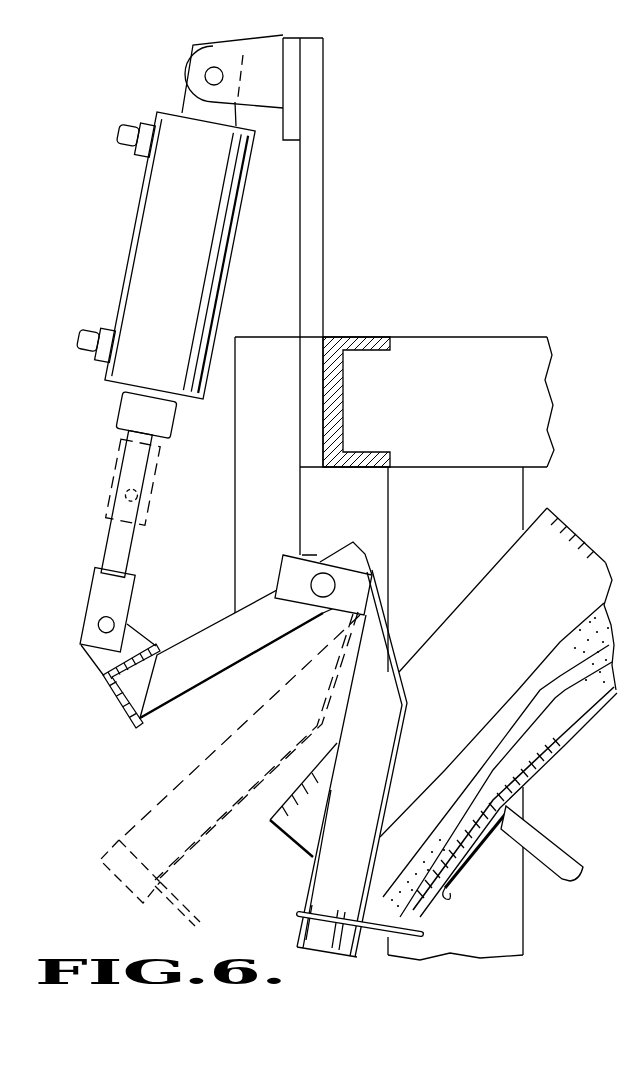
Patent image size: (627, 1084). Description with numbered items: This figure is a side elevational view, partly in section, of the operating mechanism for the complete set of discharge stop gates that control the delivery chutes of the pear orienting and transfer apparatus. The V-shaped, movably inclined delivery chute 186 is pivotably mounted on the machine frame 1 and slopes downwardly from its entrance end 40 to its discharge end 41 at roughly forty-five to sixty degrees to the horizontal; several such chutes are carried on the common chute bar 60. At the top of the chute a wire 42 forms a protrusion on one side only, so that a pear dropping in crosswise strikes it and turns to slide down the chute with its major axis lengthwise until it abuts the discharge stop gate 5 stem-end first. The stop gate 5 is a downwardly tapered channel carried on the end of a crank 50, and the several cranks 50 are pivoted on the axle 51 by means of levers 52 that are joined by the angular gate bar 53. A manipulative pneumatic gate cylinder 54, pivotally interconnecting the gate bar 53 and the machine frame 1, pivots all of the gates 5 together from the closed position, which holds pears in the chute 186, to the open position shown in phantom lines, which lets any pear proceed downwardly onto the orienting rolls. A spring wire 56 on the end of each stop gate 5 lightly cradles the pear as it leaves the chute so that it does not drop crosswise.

The machine frame 1 is at (453, 343).
The pneumatic gate cylinder 54 is at (130, 242).
The lever 52 is at (170, 698).
The angular gate bar 53 is at (115, 695).
The crank 50 is at (333, 572).
The axle 51 is at (313, 580).
The discharge stop gate 5 is at (309, 889).
The discharge end 41 is at (266, 824).
The entrance end 40 is at (600, 537).
The delivery chute 186 is at (497, 568).
The wire 42 is at (538, 678).
The chute bar 60 is at (557, 855).
The spring wire 56 is at (423, 930).